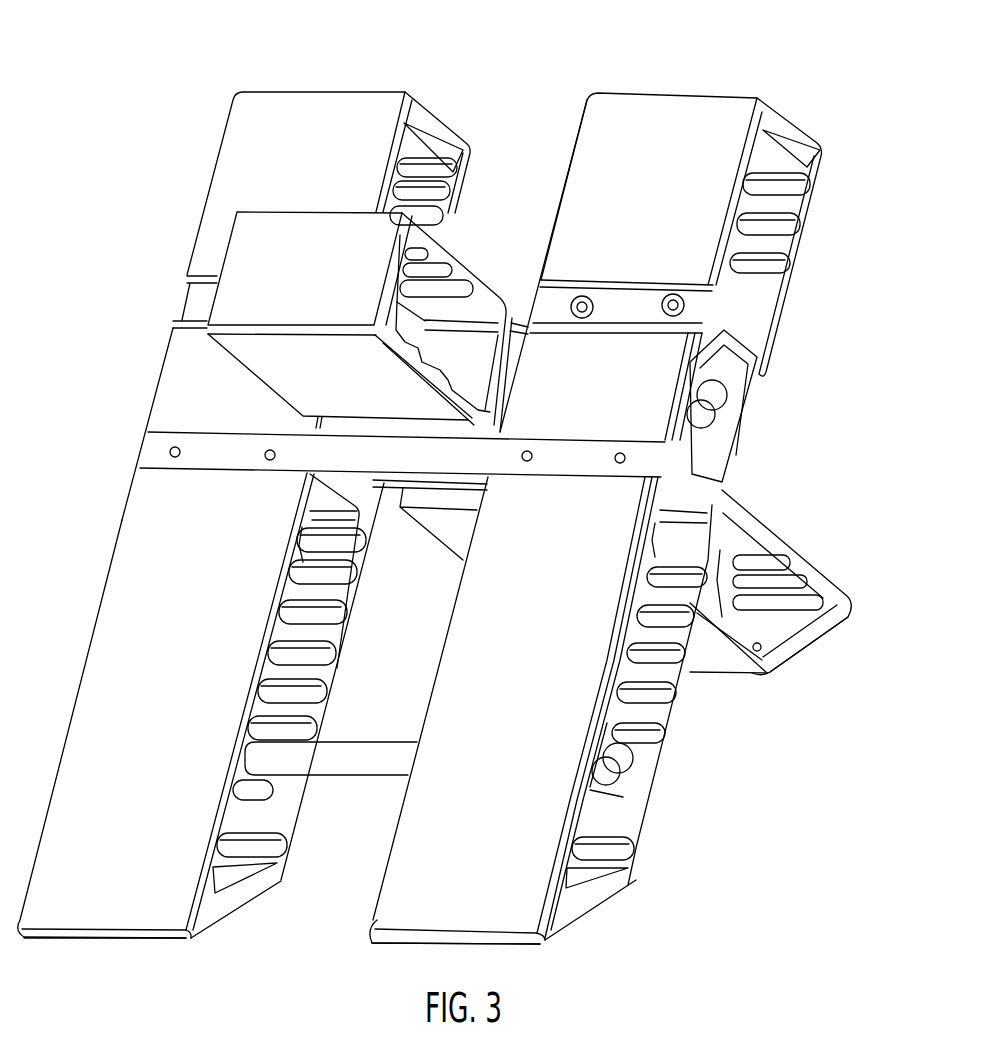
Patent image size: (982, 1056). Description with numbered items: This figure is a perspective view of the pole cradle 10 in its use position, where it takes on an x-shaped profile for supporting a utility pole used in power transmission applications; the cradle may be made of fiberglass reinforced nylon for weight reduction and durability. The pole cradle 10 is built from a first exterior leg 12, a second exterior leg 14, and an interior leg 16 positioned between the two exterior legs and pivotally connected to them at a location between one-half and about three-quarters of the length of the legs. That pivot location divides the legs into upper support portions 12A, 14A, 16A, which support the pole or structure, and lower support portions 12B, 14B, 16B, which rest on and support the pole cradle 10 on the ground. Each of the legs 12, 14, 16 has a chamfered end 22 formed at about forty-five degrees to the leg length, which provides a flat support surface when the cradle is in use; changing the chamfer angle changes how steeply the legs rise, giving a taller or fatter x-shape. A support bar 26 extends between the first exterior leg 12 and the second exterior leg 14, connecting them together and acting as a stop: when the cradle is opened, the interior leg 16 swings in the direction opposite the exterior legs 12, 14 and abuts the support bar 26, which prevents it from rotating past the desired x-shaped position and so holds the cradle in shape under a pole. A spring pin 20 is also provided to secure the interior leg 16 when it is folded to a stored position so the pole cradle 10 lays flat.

The pole cradle 10 is at (462, 519).
The first exterior leg 12 is at (244, 515).
The upper support portion of the first exterior leg 12A is at (233, 122).
The lower support portion of the first exterior leg 12B is at (98, 653).
The second exterior leg 14 is at (562, 496).
The upper support portion of the second exterior leg 14A is at (693, 102).
The lower support portion of the second exterior leg 14B is at (393, 868).
The interior leg 16 is at (543, 462).
The upper support portion of the interior leg 16A is at (435, 247).
The lower support portion of the interior leg 16B is at (778, 546).
The spring pin 20 is at (623, 765).
The chamfered end 22 is at (97, 942).
The support bar 26 is at (645, 445).